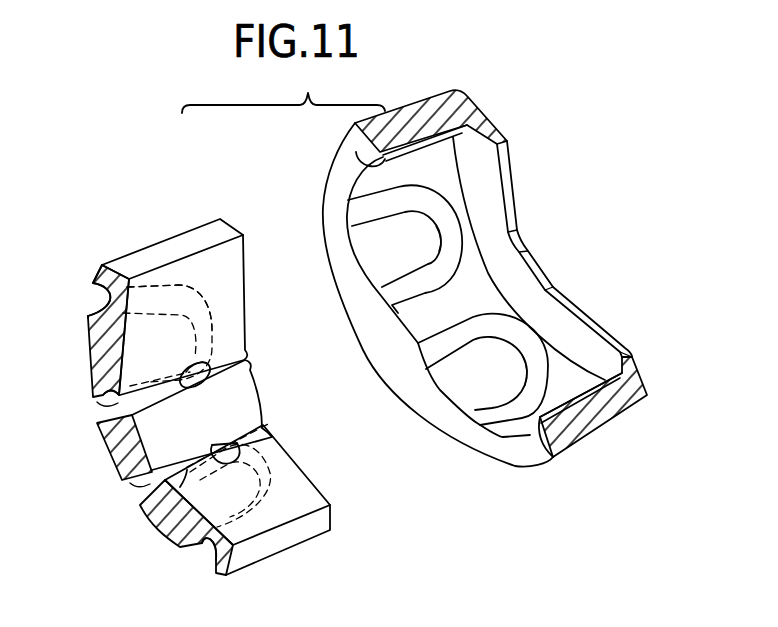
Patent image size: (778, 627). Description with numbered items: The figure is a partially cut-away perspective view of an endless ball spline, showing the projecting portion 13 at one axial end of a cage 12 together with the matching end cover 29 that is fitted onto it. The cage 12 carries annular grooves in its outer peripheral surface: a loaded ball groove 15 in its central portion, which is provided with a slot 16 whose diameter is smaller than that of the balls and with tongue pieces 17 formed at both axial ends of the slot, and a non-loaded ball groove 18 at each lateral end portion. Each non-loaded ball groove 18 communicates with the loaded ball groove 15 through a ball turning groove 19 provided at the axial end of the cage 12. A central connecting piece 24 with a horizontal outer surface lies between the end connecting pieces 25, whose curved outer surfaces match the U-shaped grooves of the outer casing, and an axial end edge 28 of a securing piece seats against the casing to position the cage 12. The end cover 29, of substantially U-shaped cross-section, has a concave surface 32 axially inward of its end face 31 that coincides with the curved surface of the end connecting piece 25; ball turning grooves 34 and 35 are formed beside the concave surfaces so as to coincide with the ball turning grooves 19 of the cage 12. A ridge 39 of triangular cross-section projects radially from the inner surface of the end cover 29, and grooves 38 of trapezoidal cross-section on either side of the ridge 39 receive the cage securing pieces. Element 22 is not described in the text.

The cage 12 is at (278, 556).
The projecting portion 13 is at (198, 238).
The loaded ball groove 15 is at (108, 408).
The slot 16 is at (152, 384).
The tongue piece 17 is at (190, 360).
The non-loaded ball groove 18 is at (108, 298).
The ball turning groove 19 is at (207, 315).
The step 22 is at (87, 317).
The central connecting piece 24 is at (113, 443).
The end connecting piece 25 is at (242, 404).
The axial end edge 28 is at (99, 268).
The end cover 29 is at (428, 94).
The end face 31 is at (367, 332).
The concave surface 32 is at (416, 325).
The ball turning groove 34 is at (443, 217).
The ball turning groove 35 is at (525, 338).
The groove 38 is at (357, 187).
The ridge 39 is at (380, 152).